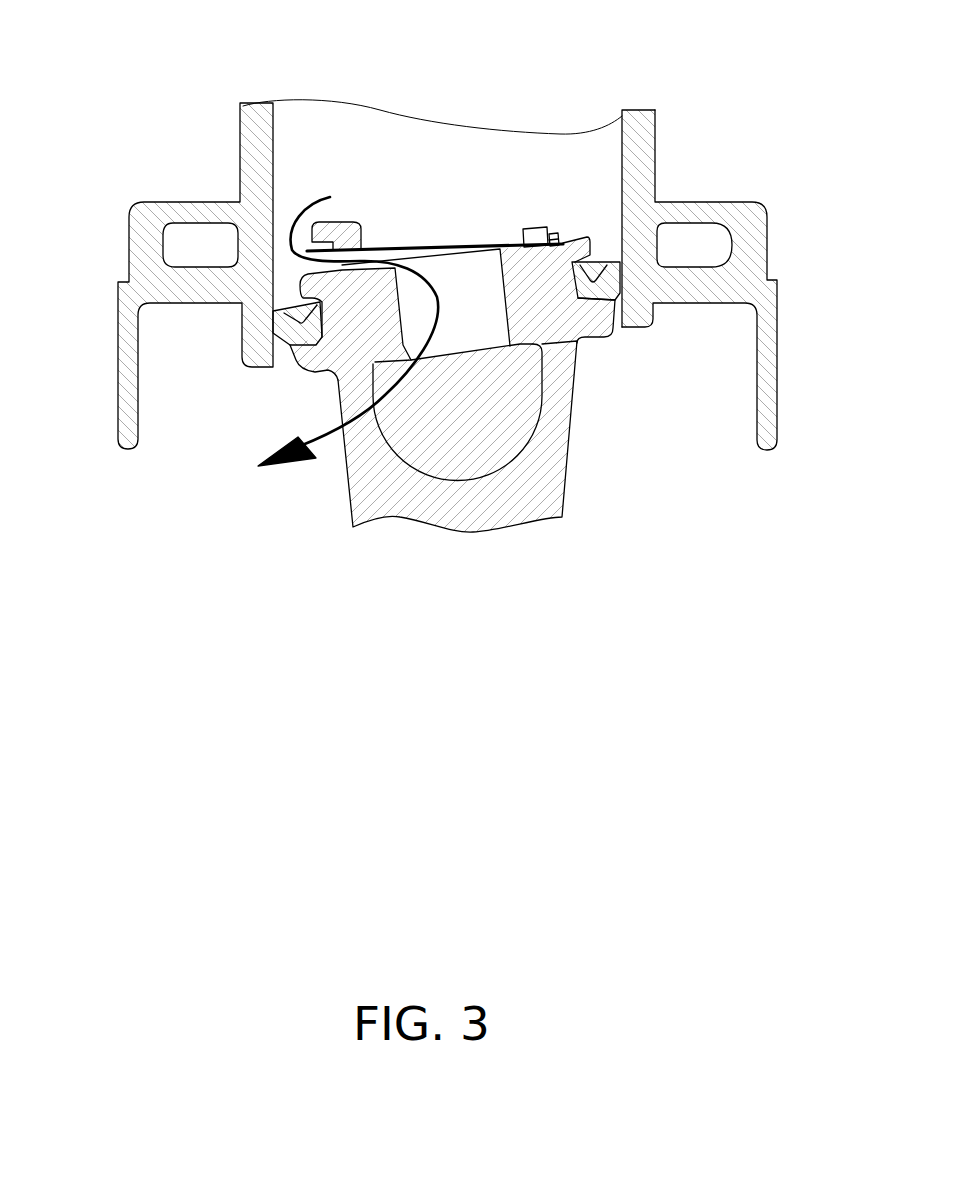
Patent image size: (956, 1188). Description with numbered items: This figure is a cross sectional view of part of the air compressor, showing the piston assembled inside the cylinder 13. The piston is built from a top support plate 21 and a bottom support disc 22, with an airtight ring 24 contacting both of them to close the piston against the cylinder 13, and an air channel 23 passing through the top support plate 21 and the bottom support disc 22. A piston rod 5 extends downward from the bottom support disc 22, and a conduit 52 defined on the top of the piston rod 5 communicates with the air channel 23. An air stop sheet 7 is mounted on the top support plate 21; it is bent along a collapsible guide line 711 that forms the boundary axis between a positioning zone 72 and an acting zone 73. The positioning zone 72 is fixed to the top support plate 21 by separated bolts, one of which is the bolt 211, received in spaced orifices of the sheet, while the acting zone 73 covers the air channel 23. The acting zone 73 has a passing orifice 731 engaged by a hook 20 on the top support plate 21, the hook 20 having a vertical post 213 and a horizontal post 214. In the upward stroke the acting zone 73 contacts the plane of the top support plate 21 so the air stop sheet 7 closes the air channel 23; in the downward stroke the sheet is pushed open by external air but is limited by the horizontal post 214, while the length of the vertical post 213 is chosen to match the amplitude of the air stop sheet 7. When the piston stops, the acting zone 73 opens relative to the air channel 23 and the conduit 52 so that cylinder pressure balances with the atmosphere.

The horizontal post 214 is at (330, 196).
The vertical post 213 is at (300, 268).
The hook 20 is at (327, 233).
The passing orifice 731 is at (355, 230).
The acting zone 73 is at (402, 247).
The air stop sheet 7 is at (448, 245).
The collapsible guide line 711 is at (503, 237).
The positioning zone 72 is at (523, 228).
The bolt 211 is at (537, 227).
The top support plate 21 is at (565, 238).
The cylinder 13 is at (643, 166).
The airtight ring 24 is at (600, 285).
The bottom support disc 22 is at (273, 361).
The air channel 23 is at (460, 300).
The conduit 52 is at (455, 410).
The piston rod 5 is at (510, 488).